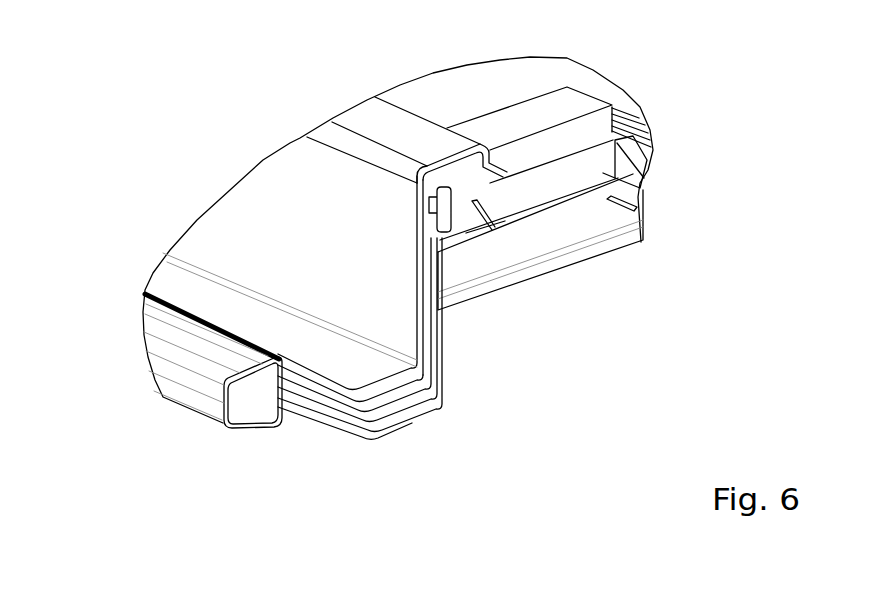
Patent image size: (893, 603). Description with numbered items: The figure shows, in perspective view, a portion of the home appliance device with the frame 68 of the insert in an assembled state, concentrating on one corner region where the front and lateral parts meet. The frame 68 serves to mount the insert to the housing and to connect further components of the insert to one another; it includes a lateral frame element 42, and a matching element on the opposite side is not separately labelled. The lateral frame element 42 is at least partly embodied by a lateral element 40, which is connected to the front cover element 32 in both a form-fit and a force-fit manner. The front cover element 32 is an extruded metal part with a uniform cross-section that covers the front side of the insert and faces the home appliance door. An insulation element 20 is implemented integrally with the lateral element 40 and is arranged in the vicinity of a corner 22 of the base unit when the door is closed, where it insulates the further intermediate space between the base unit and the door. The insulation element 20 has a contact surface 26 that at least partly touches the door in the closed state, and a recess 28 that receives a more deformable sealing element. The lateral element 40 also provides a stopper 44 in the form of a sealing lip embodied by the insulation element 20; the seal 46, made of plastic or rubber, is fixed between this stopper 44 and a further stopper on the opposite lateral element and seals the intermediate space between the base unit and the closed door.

The insulation element 20 is at (408, 410).
The corner 22 is at (440, 410).
The contact surface 26 is at (345, 410).
The recess 28 is at (318, 427).
The front cover element 32 is at (425, 347).
The lateral element 40 is at (440, 310).
The lateral frame element 42 is at (642, 106).
The stopper 44 is at (278, 400).
The seal 46 is at (187, 363).
The frame 68 is at (605, 260).